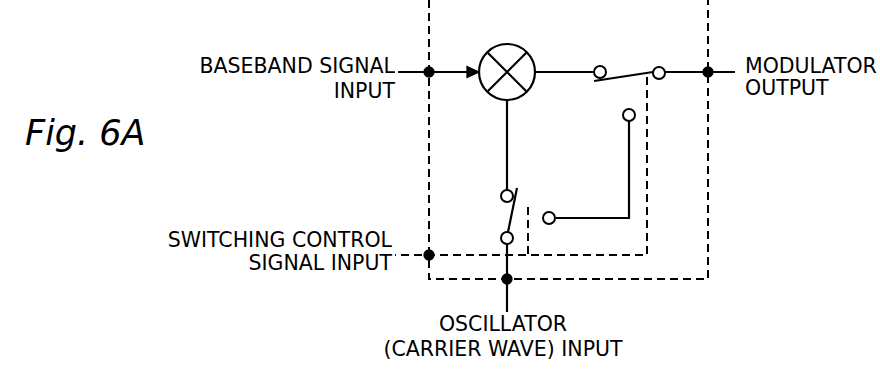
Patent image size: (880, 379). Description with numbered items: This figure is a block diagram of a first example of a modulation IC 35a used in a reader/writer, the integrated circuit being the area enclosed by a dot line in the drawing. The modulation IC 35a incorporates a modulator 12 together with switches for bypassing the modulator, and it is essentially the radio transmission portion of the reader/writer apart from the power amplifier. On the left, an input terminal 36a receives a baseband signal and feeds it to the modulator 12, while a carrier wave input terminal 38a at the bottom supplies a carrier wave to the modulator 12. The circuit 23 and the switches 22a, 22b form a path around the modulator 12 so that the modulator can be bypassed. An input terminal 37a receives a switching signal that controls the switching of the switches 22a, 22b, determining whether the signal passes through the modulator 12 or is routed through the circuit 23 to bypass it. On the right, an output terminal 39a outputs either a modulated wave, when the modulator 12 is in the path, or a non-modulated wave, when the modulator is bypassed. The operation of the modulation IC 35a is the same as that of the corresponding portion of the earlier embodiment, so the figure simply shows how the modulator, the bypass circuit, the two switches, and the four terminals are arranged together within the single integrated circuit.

The modulator 12 is at (508, 46).
The switch 22a is at (510, 215).
The switch 22b is at (624, 76).
The circuit 23 is at (632, 168).
The modulation IC 35a is at (710, 207).
The input terminal 36a is at (429, 72).
The input terminal 37a is at (428, 255).
The carrier wave input terminal 38a is at (508, 280).
The output terminal 39a is at (708, 72).